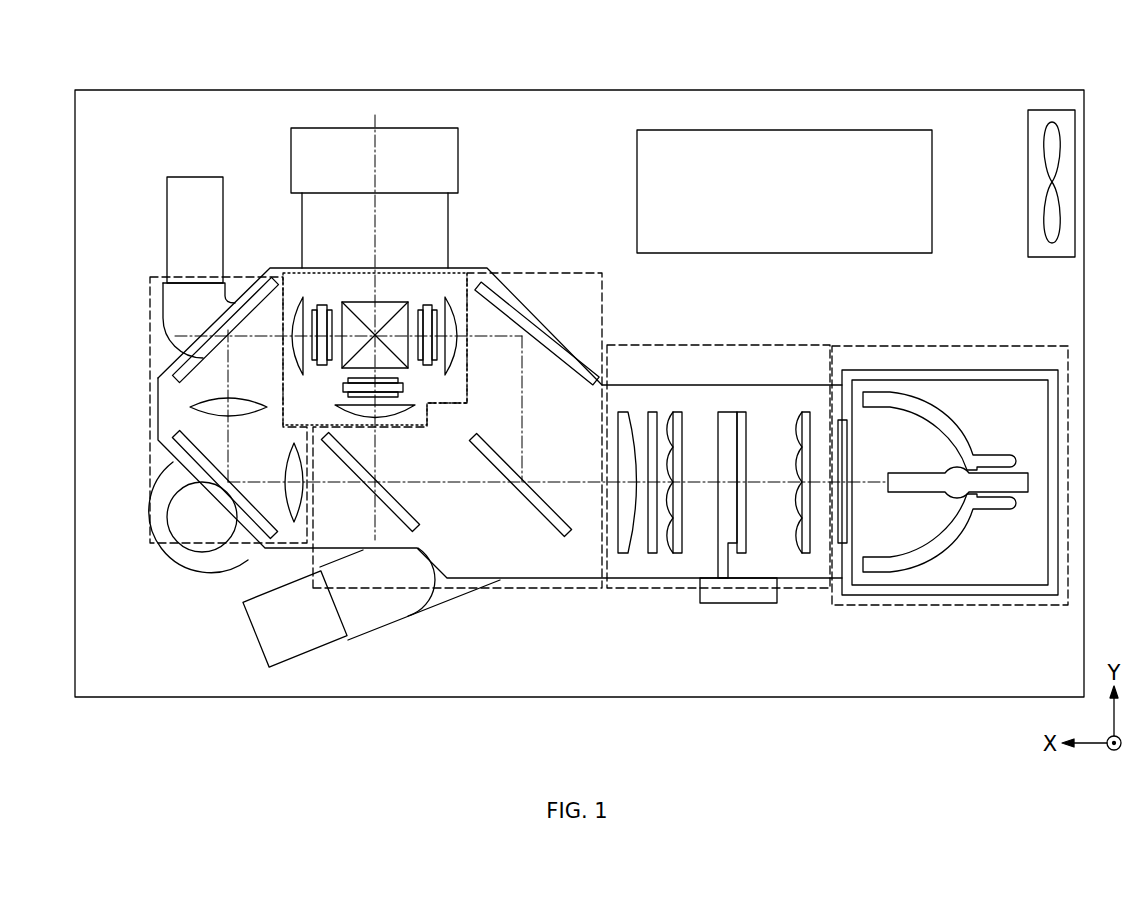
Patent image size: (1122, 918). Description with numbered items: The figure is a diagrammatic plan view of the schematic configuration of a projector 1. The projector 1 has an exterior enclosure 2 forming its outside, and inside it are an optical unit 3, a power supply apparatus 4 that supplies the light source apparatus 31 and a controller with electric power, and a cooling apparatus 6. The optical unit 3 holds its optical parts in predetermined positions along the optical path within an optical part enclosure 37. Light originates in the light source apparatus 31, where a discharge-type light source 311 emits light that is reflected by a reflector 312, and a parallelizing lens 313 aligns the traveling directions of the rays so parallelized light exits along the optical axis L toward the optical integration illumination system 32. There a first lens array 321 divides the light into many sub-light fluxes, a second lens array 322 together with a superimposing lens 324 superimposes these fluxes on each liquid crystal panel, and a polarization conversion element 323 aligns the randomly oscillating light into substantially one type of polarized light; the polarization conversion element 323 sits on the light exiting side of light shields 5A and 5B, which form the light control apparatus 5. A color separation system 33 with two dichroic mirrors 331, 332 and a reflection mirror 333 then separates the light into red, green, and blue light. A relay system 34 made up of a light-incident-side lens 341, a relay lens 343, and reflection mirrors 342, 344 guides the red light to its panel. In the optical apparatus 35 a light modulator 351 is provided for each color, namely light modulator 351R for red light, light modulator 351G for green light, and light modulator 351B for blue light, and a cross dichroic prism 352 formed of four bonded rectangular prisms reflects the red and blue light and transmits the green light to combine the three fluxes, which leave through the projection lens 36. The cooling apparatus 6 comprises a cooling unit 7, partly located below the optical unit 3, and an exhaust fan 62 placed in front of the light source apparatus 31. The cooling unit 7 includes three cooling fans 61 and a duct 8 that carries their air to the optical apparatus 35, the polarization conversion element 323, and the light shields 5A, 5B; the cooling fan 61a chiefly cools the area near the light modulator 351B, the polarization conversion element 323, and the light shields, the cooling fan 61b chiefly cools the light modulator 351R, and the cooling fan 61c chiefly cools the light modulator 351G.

The projector 1 is at (555, 359).
The exterior enclosure 2 is at (75, 240).
The optical unit 3 is at (566, 164).
The power supply apparatus 4 is at (638, 190).
The light control apparatus 5 is at (738, 513).
The light shield 5A is at (743, 420).
The light shield 5B is at (728, 420).
The cooling apparatus 6 is at (729, 428).
The cooling unit 7 is at (388, 668).
The duct 8 is at (407, 607).
The light source apparatus 31 is at (934, 507).
The light source 311 is at (923, 483).
The reflector 312 is at (957, 527).
The parallelizing lens 313 is at (840, 540).
The optical integration illumination system 32 is at (718, 477).
The first lens array 321 is at (802, 420).
The second lens array 322 is at (677, 420).
The polarization conversion element 323 is at (653, 420).
The superimposing lens 324 is at (628, 420).
The color separation system 33 is at (457, 470).
The dichroic mirror 331 is at (540, 500).
The dichroic mirror 332 is at (403, 508).
The reflection mirror 333 is at (538, 347).
The relay system 34 is at (234, 410).
The light-incident-side lens 341 is at (297, 497).
The reflection mirror 342 is at (173, 434).
The relay lens 343 is at (240, 408).
The reflection mirror 344 is at (205, 345).
The optical apparatus 35 is at (375, 341).
The light modulator 351 is at (375, 344).
The light modulator for R light 351R is at (318, 302).
The light modulator for G light 351G is at (410, 385).
The light modulator for B light 351B is at (428, 302).
The cross dichroic prism 352 is at (390, 300).
The projection lens 36 is at (452, 156).
The optical part enclosure 37 is at (590, 590).
The cooling fans 61 is at (220, 434).
The cooling fan 61a is at (265, 623).
The cooling fan 61b is at (200, 567).
The cooling fan 61c is at (175, 212).
The exhaust fan 62 is at (1037, 185).
The optical axis L is at (785, 478).